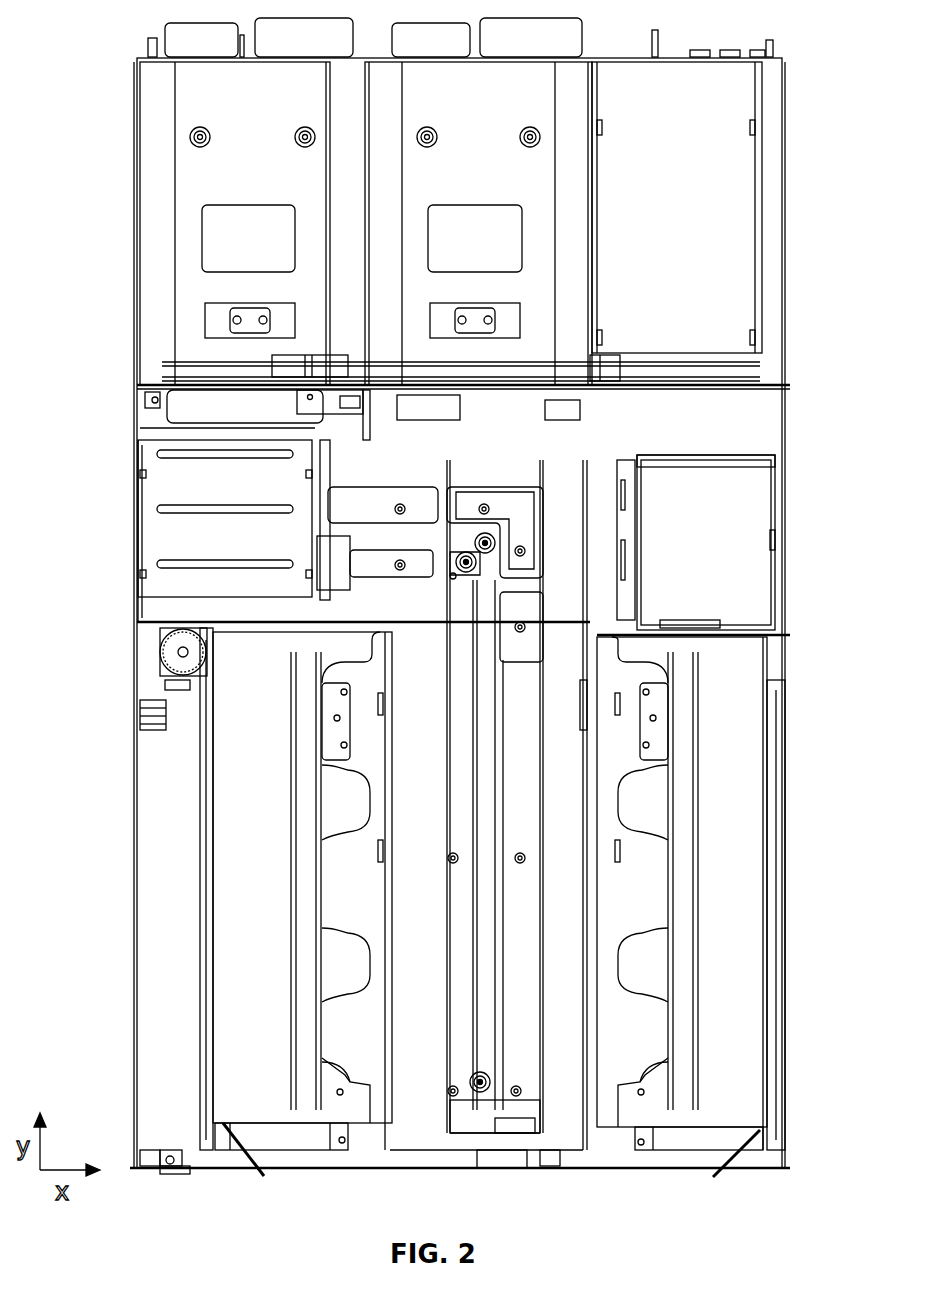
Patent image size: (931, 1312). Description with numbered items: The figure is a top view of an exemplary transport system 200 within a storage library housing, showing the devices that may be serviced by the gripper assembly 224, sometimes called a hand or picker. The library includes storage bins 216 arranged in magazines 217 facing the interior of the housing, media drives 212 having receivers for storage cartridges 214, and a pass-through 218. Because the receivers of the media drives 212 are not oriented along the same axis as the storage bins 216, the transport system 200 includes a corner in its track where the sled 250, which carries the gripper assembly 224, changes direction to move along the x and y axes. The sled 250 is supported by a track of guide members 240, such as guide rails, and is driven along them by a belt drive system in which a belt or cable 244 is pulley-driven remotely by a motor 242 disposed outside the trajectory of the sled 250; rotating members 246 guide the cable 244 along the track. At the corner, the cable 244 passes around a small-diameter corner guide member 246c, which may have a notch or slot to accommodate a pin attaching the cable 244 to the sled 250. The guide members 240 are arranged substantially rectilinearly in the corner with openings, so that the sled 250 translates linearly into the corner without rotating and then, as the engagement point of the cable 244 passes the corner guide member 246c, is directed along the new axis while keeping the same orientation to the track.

The transport system 200 is at (553, 1117).
The media drive 212 is at (188, 163).
The storage cartridge 214 is at (188, 403).
The storage bin 216 is at (325, 721).
The magazine 217 is at (750, 663).
The pass-through 218 is at (742, 525).
The gripper assembly 224 is at (160, 478).
The guide member 240 is at (387, 553).
The motor 242 is at (165, 660).
The belt or cable 244 is at (493, 1073).
The rotating member 246 is at (477, 1087).
The corner guide member 246c is at (500, 530).
The sled 250 is at (137, 528).